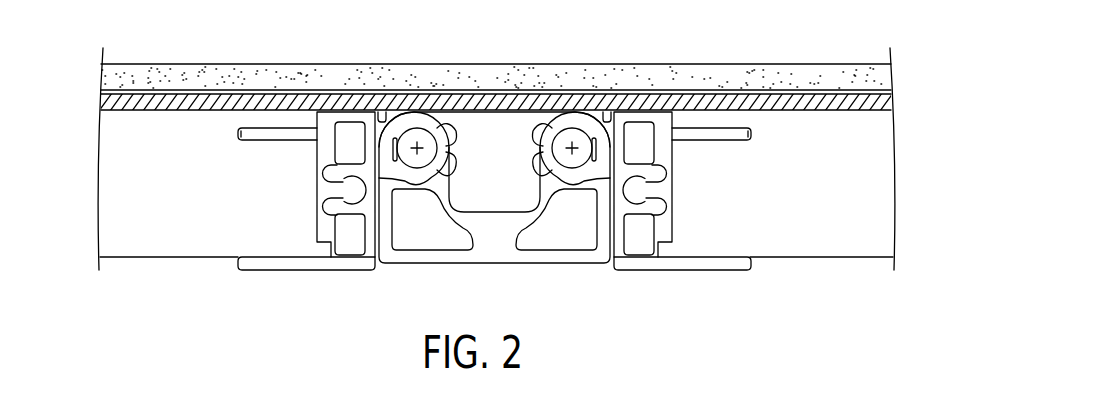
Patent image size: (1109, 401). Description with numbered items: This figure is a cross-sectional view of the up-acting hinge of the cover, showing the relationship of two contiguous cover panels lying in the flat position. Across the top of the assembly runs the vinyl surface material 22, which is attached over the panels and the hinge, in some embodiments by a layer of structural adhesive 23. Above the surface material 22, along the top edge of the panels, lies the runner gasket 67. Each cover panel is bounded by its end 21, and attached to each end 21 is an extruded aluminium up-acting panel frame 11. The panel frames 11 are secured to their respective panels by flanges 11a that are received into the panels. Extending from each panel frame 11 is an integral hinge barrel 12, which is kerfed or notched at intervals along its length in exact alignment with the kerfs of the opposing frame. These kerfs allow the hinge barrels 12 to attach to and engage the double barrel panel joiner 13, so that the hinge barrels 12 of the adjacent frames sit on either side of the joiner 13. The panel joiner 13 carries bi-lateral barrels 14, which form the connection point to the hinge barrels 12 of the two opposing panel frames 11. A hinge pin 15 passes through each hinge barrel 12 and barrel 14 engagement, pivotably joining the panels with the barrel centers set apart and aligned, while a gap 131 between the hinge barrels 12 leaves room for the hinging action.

The panel frame 11 is at (327, 262).
The flange 11a is at (252, 137).
The hinge barrel 12 is at (410, 121).
The double barrel panel joiner 13 is at (487, 250).
The gap 131 is at (508, 203).
The bi-lateral barrel 14 is at (446, 138).
The hinge pin 15 is at (419, 134).
The end of cover panel 21 is at (318, 158).
The vinyl surface material 22 is at (753, 93).
The structural adhesive 23 is at (710, 115).
The runner gasket 67 is at (313, 77).